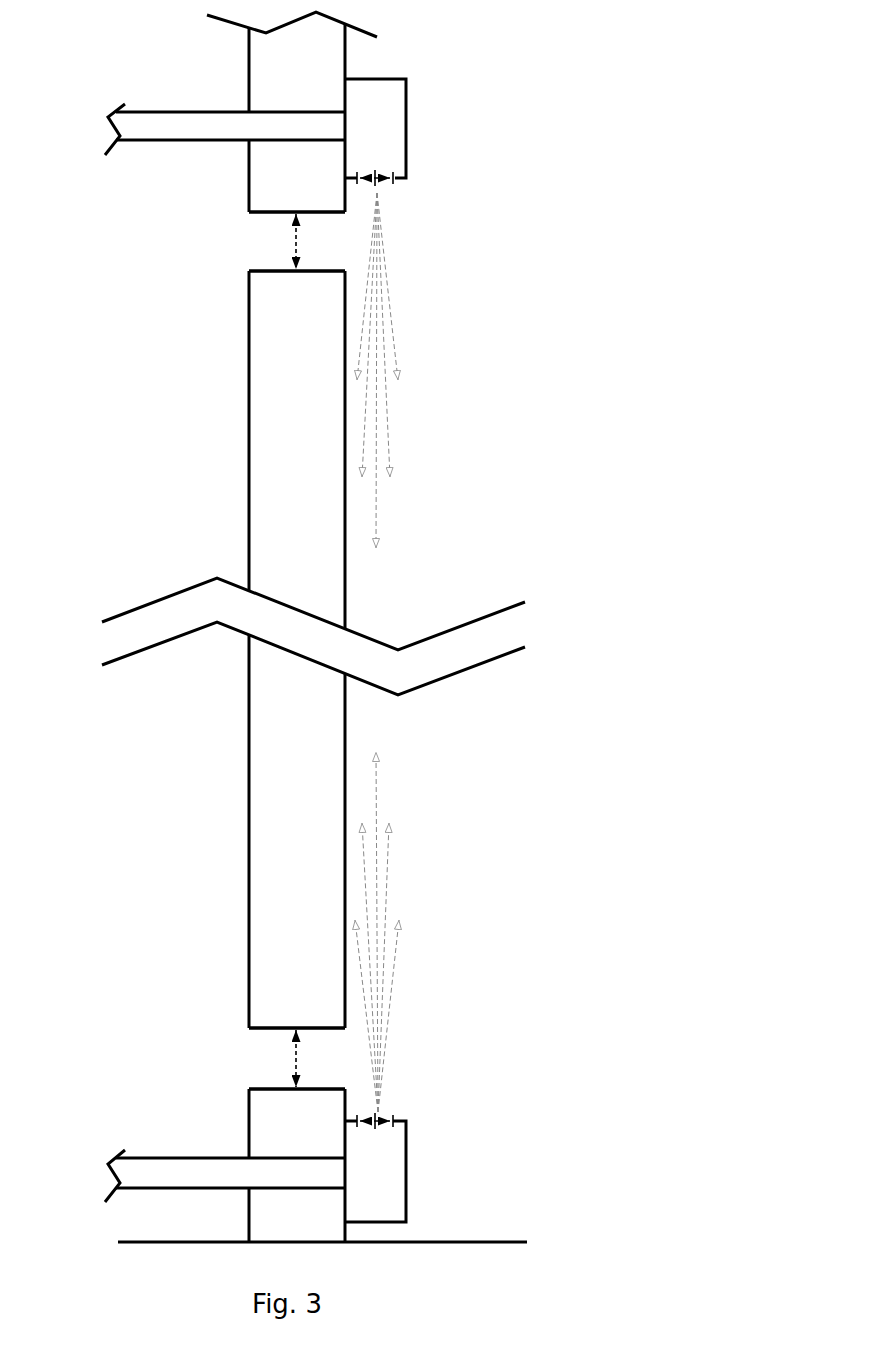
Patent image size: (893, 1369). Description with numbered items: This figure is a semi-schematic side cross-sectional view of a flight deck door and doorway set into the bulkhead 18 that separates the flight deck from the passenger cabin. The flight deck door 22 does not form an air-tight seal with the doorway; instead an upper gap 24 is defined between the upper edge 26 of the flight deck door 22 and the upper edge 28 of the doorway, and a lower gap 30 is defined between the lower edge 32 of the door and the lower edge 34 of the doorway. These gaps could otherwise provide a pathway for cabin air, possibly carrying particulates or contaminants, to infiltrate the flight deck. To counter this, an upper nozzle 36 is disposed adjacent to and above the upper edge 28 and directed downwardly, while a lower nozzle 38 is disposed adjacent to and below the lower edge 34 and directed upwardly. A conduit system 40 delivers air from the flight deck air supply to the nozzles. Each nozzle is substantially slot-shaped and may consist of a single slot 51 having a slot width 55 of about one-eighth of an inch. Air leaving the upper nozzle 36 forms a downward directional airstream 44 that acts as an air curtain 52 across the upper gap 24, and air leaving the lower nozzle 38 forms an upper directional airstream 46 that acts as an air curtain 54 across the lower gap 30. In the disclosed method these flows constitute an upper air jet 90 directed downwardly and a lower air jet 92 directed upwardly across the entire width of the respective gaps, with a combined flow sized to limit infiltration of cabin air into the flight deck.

The bulkhead 18 is at (248, 73).
The flight deck door 22 is at (249, 430).
The upper gap 24 is at (294, 240).
The upper edge of flight deck door 26 is at (257, 269).
The upper edge of flight deck doorway 28 is at (256, 214).
The lower gap 30 is at (294, 1060).
The lower edge of flight deck door 32 is at (263, 1030).
The lower edge of flight deck doorway 34 is at (264, 1088).
The upper nozzle 36 is at (425, 93).
The lower nozzle 38 is at (430, 1181).
The conduit system 40 is at (134, 156).
The downward directional airstream 44 is at (410, 292).
The upper directional airstream 46 is at (430, 978).
The single slot 51 is at (388, 184).
The air curtain 52 is at (425, 337).
The air curtain 54 is at (445, 918).
The slot width 55 is at (378, 176).
The upper air jet 90 is at (410, 247).
The lower air jet 92 is at (430, 1053).